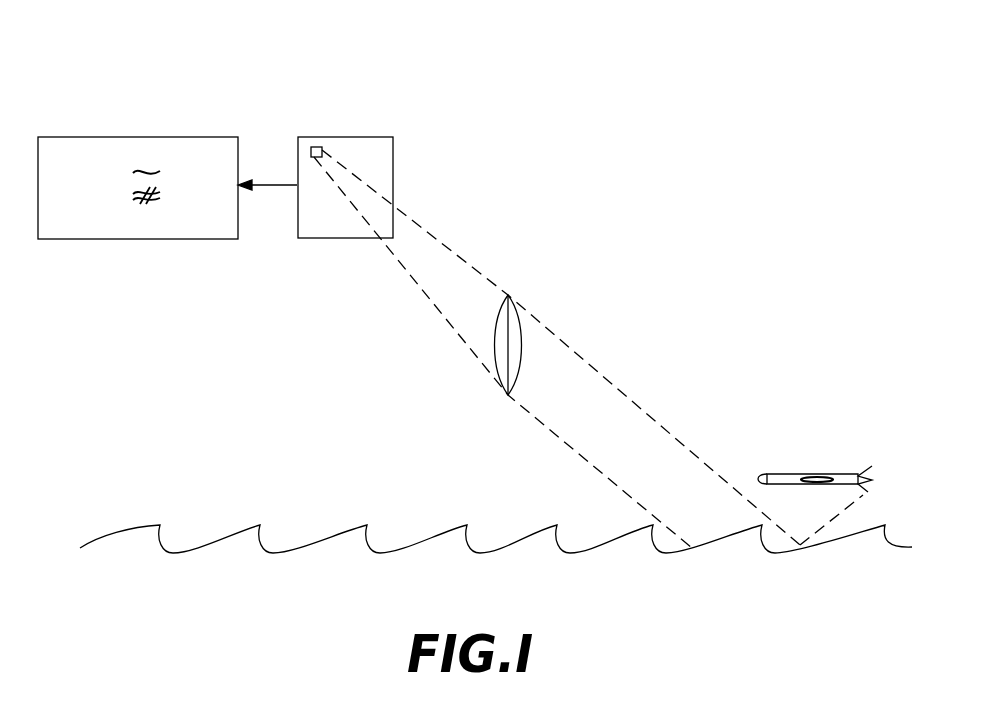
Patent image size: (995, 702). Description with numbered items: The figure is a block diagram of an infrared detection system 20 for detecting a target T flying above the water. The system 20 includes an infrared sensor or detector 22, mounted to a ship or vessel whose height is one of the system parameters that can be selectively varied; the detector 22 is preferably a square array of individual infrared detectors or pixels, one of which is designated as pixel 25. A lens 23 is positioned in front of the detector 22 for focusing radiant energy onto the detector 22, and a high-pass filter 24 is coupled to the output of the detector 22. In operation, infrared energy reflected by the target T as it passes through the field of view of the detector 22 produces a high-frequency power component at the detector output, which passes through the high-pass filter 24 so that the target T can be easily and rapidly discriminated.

The infrared detection system 20 is at (568, 71).
The infrared detector 22 is at (393, 152).
The lens 23 is at (522, 356).
The high-pass filter 24 is at (143, 137).
The pixel 25 is at (316, 147).
The target T is at (802, 473).